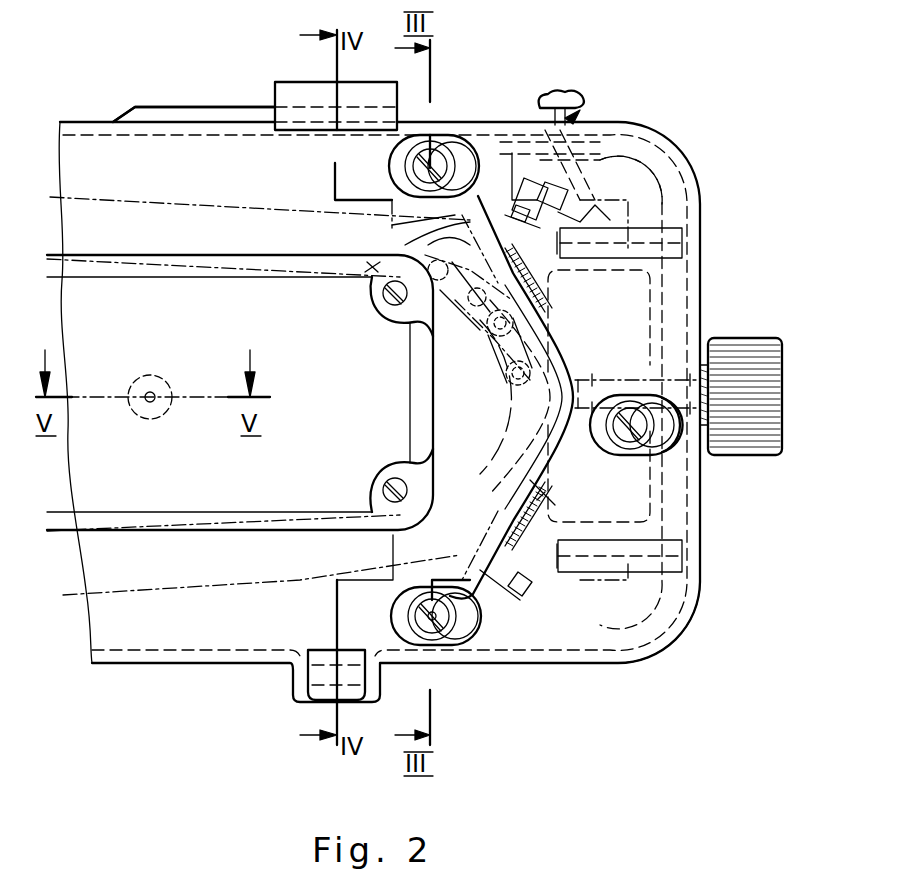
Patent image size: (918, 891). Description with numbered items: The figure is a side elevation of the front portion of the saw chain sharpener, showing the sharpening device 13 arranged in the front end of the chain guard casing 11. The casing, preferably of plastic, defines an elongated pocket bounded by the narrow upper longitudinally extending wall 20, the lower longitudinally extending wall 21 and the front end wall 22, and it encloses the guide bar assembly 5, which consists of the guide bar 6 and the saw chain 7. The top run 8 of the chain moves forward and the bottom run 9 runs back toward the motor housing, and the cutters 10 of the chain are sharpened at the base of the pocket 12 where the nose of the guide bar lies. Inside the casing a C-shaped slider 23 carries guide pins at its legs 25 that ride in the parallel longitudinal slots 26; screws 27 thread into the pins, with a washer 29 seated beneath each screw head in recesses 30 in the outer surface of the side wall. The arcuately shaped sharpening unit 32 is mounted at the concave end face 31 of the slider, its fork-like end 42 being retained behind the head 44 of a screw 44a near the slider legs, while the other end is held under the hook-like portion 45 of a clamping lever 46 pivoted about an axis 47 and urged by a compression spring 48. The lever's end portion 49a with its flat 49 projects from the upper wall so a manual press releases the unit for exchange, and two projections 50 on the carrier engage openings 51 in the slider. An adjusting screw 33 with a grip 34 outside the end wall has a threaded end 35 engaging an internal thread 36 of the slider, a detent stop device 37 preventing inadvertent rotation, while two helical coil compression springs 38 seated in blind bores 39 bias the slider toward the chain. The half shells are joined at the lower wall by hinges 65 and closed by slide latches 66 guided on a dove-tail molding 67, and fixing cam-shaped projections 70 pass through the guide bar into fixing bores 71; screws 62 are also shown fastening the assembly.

The guide bar assembly 5 is at (183, 600).
The guide bar 6 is at (212, 314).
The saw chain 7 is at (208, 200).
The top run 8 is at (72, 230).
The bottom run 9 is at (120, 578).
The cutters 10 is at (485, 318).
The chain guard casing 11 is at (72, 163).
The base of the pocket 12 is at (641, 660).
The sharpening device 13 is at (540, 409).
The upper longitudinally extending wall 20 is at (90, 120).
The lower longitudinally extending wall 21 is at (135, 665).
The front end wall 22 is at (690, 264).
The slider 23 is at (606, 150).
The legs 25 is at (402, 180).
The longitudinal slots 26 is at (460, 160).
The screws 27 is at (421, 170).
The washer 29 is at (437, 633).
The recesses 30 is at (420, 120).
The concave end face 31 is at (566, 320).
The sharpening unit 32 is at (552, 450).
The adjusting screw 33 is at (757, 460).
The grip 34 is at (762, 343).
The threaded end 35 is at (658, 380).
The internal thread 36 is at (593, 378).
The detent stop device 37 is at (678, 440).
The helical coil compression springs 38 is at (660, 229).
The blind bores 39 is at (558, 242).
The fork-like end 42 is at (375, 276).
The head 44 is at (490, 566).
The screw 44a is at (528, 588).
The hook-like portion 45 is at (467, 207).
The clamping lever 46 is at (515, 150).
The axis 47 is at (500, 190).
The compression spring 48 is at (546, 212).
The flat 49 is at (572, 100).
The end portion 49a is at (578, 114).
The projections 50 is at (550, 290).
The openings 51 is at (555, 490).
The fastening screw 62 is at (371, 312).
The hinges 65 is at (315, 680).
The slide latches 66 is at (298, 80).
The dove-tail molding 67 is at (240, 105).
The fixing cam-shaped projections 70 is at (140, 384).
The fixing bores 71 is at (163, 413).